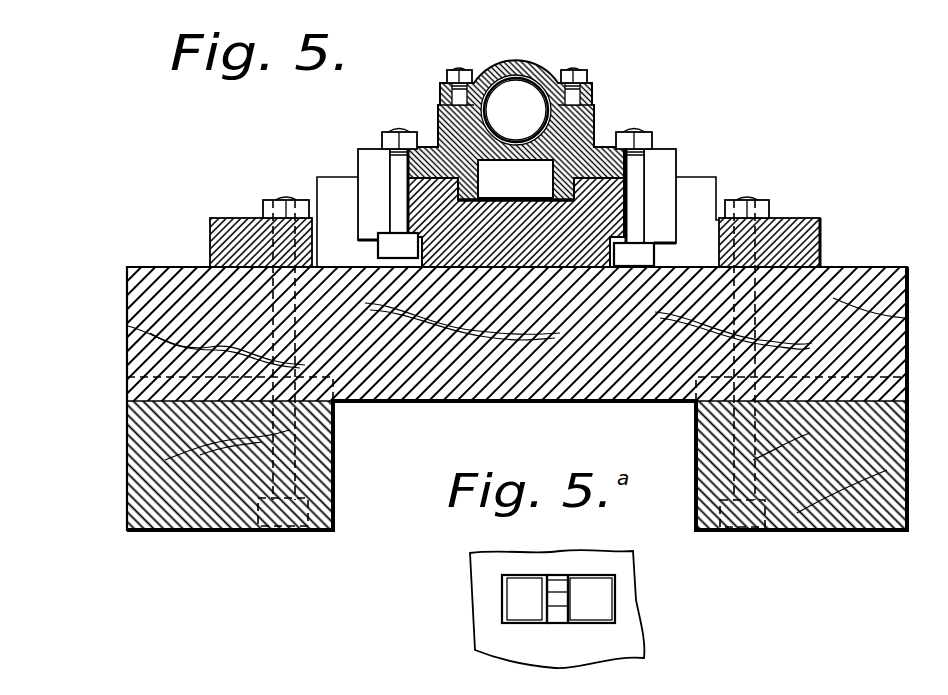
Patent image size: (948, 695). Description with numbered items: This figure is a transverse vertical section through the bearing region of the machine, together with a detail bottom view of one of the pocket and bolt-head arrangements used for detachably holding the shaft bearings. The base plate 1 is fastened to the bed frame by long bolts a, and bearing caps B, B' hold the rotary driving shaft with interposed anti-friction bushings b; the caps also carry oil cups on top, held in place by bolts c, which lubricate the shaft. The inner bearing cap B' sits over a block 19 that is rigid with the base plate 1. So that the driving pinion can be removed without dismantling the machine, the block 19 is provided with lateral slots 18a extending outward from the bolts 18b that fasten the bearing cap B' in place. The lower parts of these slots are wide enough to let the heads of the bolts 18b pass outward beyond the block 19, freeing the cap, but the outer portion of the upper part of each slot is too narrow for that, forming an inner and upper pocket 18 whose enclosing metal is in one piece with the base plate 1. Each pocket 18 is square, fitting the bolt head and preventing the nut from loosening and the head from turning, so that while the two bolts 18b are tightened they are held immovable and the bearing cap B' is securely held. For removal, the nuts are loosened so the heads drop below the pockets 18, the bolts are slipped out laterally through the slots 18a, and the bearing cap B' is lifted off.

In FIG. 5, the base plate 1 is at (821, 241).
In FIG. 5A, the base plate 1 is at (521, 560).
In FIG. 5, the pocket 18 is at (378, 238).
In FIG. 5A, the pocket 18 is at (502, 600).
In FIG. 5, the lateral slot 18a is at (700, 166).
In FIG. 5A, the lateral slot 18a is at (565, 585).
In FIG. 5, the bolt 18b is at (396, 131).
In FIG. 5A, the bolt 18b is at (570, 612).
In FIG. 5, the block 19 is at (408, 200).
In FIG. 5, the outer bearing cap B is at (484, 398).
In FIG. 5, the inner bearing cap B' is at (519, 157).
In FIG. 5, the long bolt a is at (283, 530).
In FIG. 5, the anti-friction bushing b is at (528, 63).
In FIG. 5, the bolt c is at (463, 70).